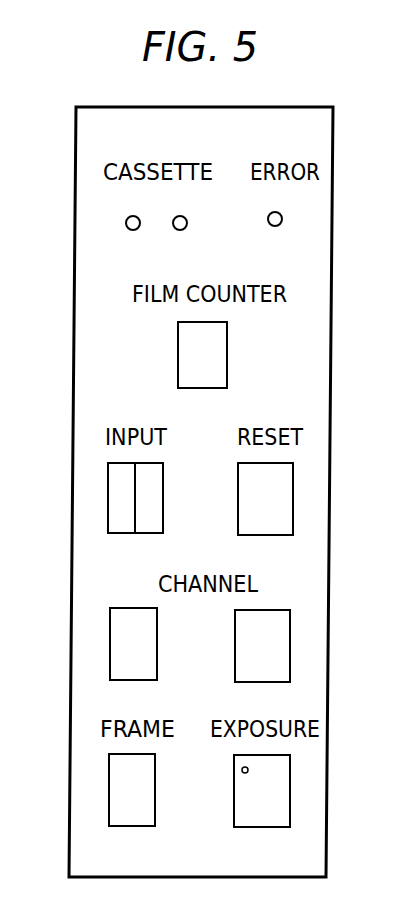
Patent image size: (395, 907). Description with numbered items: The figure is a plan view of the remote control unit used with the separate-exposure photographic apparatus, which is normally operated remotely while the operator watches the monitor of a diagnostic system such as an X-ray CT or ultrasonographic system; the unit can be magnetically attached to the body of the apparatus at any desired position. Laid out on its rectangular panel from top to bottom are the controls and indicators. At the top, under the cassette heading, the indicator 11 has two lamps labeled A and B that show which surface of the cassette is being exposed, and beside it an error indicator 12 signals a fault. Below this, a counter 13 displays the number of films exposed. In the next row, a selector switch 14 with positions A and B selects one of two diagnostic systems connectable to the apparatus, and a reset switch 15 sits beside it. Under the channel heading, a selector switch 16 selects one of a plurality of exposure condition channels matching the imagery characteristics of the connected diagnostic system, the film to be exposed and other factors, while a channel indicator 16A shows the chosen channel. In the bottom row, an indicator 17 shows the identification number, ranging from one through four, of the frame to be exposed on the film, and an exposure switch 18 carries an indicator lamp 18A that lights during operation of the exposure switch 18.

The indicator 11 is at (120, 199).
The error indicator 12 is at (288, 222).
The counter 13 is at (218, 355).
The selector switch 14 is at (115, 477).
The reset switch 15 is at (288, 490).
The channel indicator 16A is at (117, 642).
The selector switch 16 is at (282, 640).
The indicator 17 is at (120, 798).
The indicator lamp 18A is at (242, 768).
The exposure switch 18 is at (280, 790).